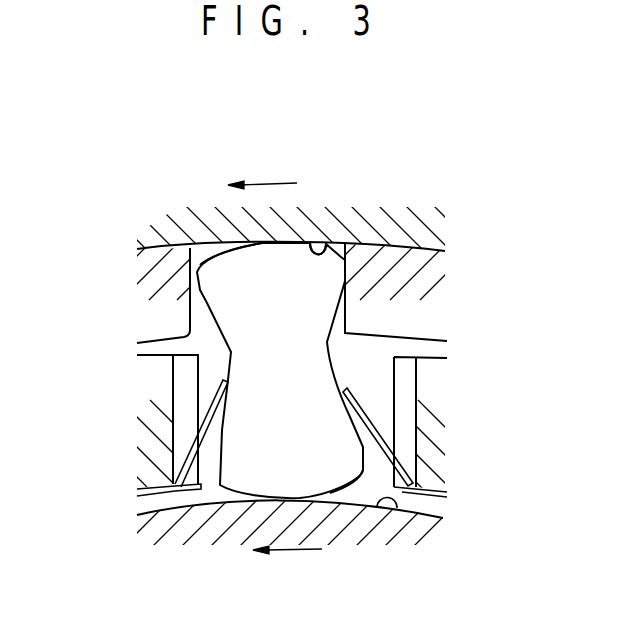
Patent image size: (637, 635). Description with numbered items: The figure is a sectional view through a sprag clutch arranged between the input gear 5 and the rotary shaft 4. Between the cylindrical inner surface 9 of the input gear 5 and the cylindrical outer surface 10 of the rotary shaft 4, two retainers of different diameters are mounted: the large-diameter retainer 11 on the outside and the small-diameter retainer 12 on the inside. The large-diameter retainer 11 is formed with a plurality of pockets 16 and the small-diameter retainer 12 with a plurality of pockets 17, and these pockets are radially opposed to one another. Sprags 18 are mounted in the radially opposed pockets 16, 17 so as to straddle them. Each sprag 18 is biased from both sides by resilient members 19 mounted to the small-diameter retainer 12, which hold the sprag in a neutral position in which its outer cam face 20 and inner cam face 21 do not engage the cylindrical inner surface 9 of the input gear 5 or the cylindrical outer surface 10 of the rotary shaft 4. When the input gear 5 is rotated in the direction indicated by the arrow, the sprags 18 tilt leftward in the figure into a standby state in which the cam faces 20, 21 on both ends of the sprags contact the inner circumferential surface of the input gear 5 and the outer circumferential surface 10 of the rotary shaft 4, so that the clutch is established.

The rotary shaft 4 is at (430, 529).
The input gear 5 is at (401, 220).
The cylindrical inner surface 9 is at (324, 243).
The cylindrical outer surface 10 is at (392, 506).
The large-diameter retainer 11 is at (157, 283).
The small-diameter retainer 12 is at (155, 393).
The pockets 16 is at (199, 248).
The pockets 17 is at (200, 456).
The sprags 18 is at (230, 305).
The resilient members 19 is at (197, 431).
The outer cam face 20 is at (218, 240).
The inner cam face 21 is at (338, 492).